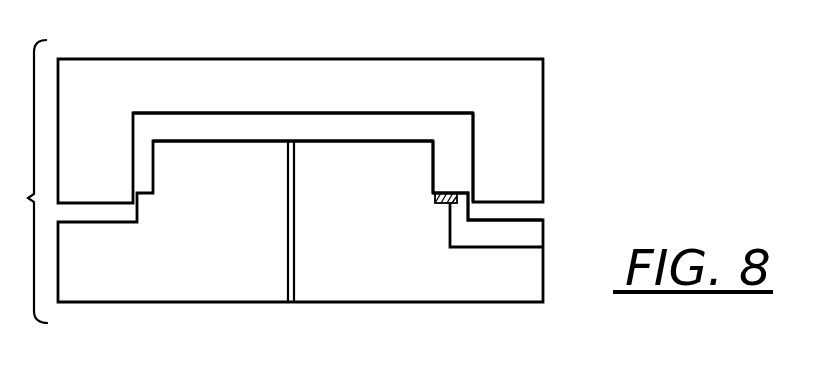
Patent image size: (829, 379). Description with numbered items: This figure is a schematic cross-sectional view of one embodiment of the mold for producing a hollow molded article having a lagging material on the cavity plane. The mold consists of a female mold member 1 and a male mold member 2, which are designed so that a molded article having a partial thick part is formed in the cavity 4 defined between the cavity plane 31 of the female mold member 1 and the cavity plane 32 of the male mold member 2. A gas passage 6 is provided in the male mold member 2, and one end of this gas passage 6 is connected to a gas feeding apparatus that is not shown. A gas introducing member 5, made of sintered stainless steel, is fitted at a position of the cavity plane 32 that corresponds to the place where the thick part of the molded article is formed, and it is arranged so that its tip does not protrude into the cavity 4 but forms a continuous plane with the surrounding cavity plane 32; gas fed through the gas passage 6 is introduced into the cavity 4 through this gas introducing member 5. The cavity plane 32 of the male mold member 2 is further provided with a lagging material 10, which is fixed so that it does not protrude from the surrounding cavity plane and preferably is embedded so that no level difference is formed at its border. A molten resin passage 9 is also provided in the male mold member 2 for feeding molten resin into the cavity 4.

The female mold member 1 is at (278, 95).
The male mold member 2 is at (222, 276).
The cavity plane 31 is at (350, 113).
The cavity plane 32 is at (407, 141).
The cavity 4 is at (457, 128).
The gas introducing member 5 is at (445, 192).
The gas passage 6 is at (508, 247).
The molten resin passage 9 is at (295, 235).
The lagging material 10 is at (442, 203).